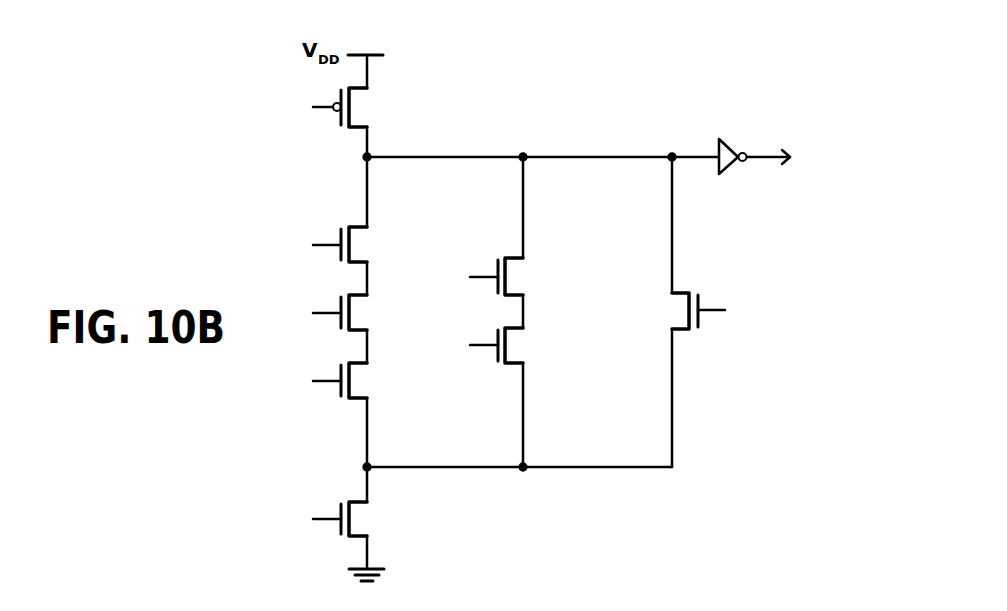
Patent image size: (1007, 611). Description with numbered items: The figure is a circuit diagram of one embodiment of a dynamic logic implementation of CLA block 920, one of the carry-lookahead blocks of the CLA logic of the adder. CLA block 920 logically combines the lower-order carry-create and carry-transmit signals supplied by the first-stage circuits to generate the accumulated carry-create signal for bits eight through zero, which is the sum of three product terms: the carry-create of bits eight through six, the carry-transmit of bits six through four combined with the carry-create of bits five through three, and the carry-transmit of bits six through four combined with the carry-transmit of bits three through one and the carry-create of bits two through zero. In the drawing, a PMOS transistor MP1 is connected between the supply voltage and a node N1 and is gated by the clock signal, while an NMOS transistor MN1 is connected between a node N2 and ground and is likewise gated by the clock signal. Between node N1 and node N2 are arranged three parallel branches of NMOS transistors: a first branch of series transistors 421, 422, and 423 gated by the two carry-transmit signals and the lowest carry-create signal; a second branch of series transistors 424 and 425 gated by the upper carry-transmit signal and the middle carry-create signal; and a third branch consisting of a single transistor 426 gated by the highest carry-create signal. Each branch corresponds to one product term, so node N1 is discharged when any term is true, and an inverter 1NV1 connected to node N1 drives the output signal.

The CLA block 920 is at (196, 38).
The transistor 421 is at (360, 248).
The transistor 422 is at (360, 308).
The transistor 423 is at (360, 380).
The transistor 424 is at (517, 277).
The transistor 425 is at (517, 345).
The transistor 426 is at (675, 310).
The PMOS precharge transistor MP1 is at (362, 105).
The NMOS evaluate transistor MN1 is at (365, 520).
The node N1 is at (373, 148).
The node N2 is at (362, 467).
The inverter 1NV1 is at (733, 143).